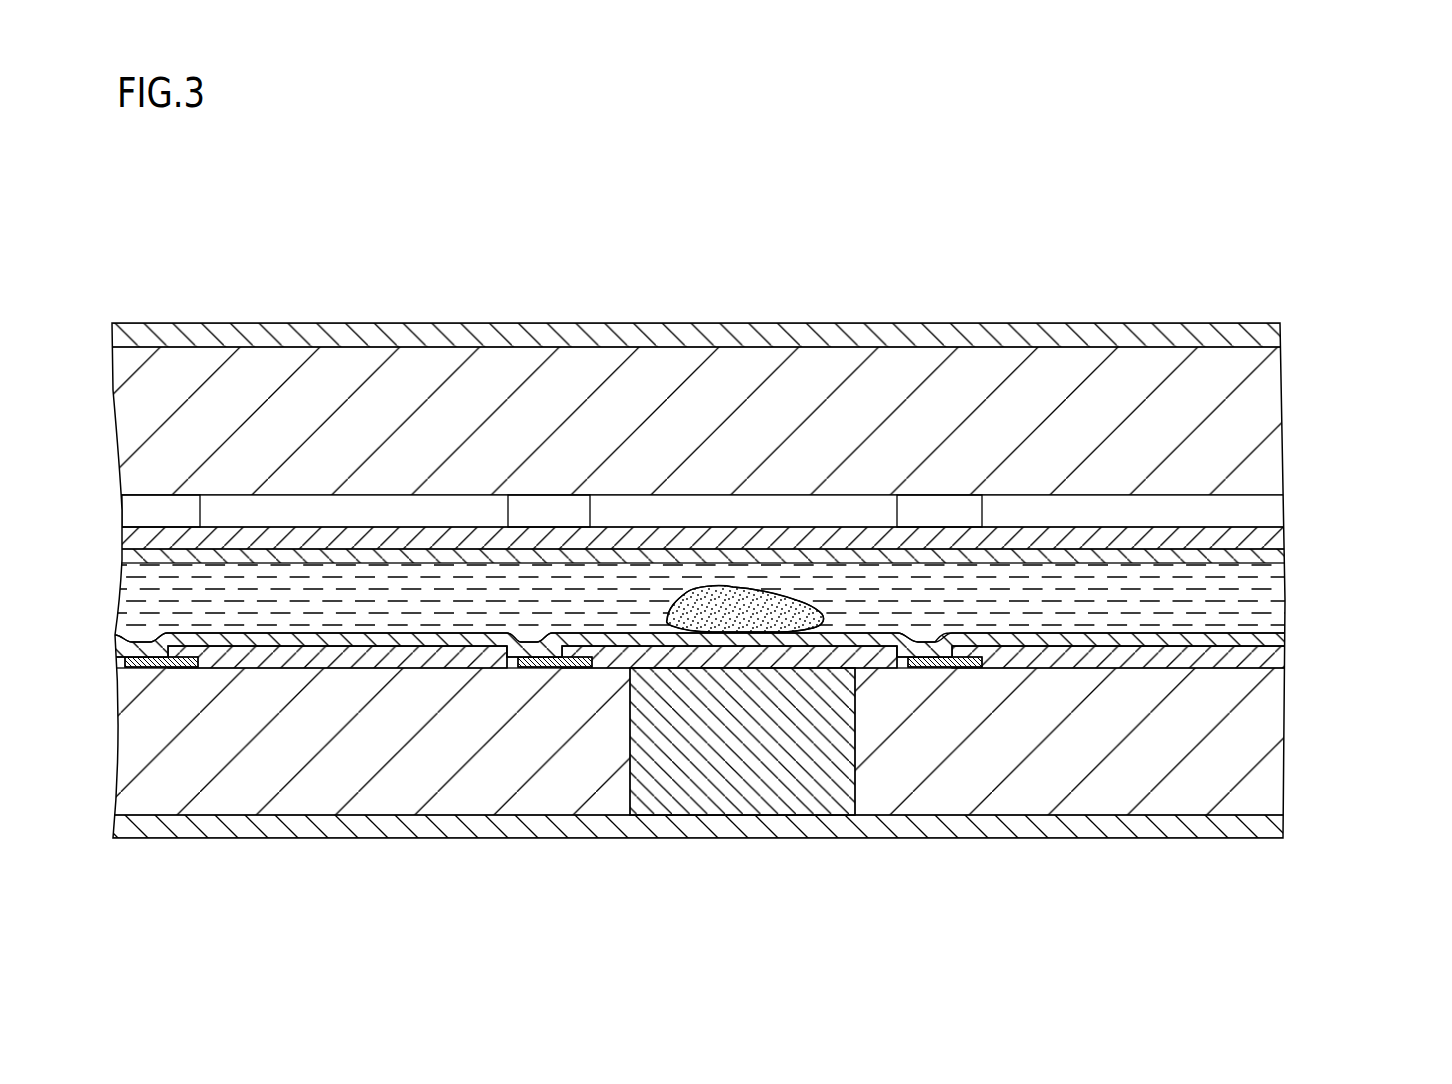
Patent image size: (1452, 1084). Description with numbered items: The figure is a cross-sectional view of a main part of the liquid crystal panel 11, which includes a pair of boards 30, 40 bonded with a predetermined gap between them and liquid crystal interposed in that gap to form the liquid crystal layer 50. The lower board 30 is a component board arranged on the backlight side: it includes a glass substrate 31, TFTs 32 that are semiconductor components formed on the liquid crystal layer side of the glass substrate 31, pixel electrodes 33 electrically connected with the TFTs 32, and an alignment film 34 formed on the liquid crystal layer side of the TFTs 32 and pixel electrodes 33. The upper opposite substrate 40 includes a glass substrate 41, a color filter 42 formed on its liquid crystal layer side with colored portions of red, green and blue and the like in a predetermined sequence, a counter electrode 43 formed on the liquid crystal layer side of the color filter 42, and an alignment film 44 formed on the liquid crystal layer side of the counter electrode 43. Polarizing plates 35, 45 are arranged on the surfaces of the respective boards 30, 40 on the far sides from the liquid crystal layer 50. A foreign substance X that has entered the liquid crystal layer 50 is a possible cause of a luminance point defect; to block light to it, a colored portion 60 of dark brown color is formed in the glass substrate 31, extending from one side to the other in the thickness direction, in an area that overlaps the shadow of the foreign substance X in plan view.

The liquid crystal panel 11 is at (765, 562).
The board 30 is at (769, 773).
The glass substrate 31 is at (1262, 787).
The TFT 32 is at (172, 668).
The pixel electrode 33 is at (355, 657).
The alignment film 34 is at (1257, 638).
The polarizing plate 35 is at (739, 837).
The opposite substrate 40 is at (769, 455).
The glass substrate 41 is at (1257, 430).
The color filter 42 is at (1267, 507).
The counter electrode 43 is at (1265, 538).
The alignment film 44 is at (739, 546).
The polarizing plate 45 is at (1257, 337).
The liquid crystal layer 50 is at (1243, 597).
The colored portion 60 is at (803, 787).
The foreign substance X is at (697, 618).